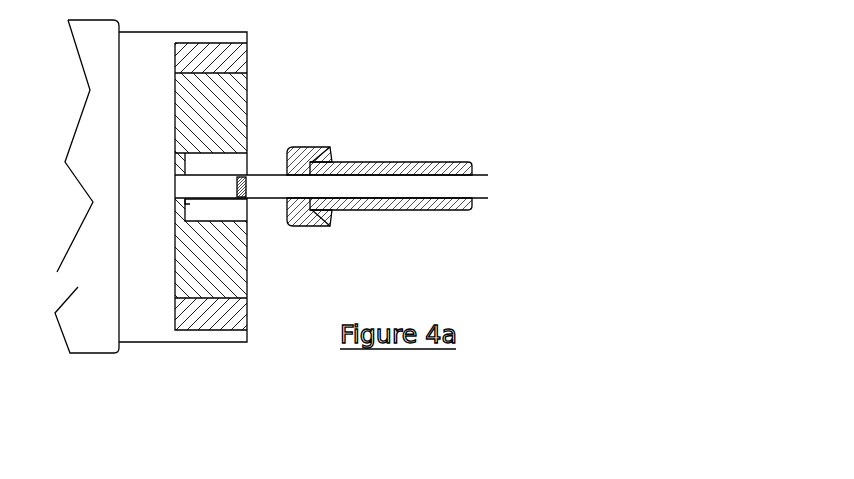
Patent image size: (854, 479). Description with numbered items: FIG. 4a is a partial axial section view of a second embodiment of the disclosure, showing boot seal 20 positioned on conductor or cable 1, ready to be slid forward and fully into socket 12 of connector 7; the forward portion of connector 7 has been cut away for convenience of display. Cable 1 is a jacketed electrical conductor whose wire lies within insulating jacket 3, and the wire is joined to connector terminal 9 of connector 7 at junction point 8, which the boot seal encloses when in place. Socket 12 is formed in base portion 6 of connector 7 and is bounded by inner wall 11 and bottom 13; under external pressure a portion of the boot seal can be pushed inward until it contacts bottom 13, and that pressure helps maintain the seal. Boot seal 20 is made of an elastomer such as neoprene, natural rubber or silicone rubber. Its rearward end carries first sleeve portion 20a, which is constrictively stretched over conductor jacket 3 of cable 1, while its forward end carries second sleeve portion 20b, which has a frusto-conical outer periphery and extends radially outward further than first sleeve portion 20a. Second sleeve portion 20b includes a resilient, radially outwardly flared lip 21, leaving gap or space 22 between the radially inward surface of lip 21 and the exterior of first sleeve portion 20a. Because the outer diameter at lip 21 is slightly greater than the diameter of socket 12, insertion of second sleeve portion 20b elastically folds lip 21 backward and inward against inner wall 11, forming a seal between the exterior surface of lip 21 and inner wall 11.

The conductor or cable 1 is at (381, 176).
The insulating jacket 3 is at (413, 190).
The base portion 6 is at (213, 93).
The connector 7 is at (55, 314).
The junction point 8 is at (242, 200).
The connector terminal 9 is at (195, 187).
The inner wall 11 is at (207, 211).
The socket 12 is at (210, 163).
The bottom 13 is at (186, 207).
The boot seal 20 is at (415, 137).
The first sleeve portion 20a is at (447, 158).
The second sleeve portion 20b is at (315, 146).
The lip 21 is at (330, 222).
The gap or space 22 is at (332, 210).